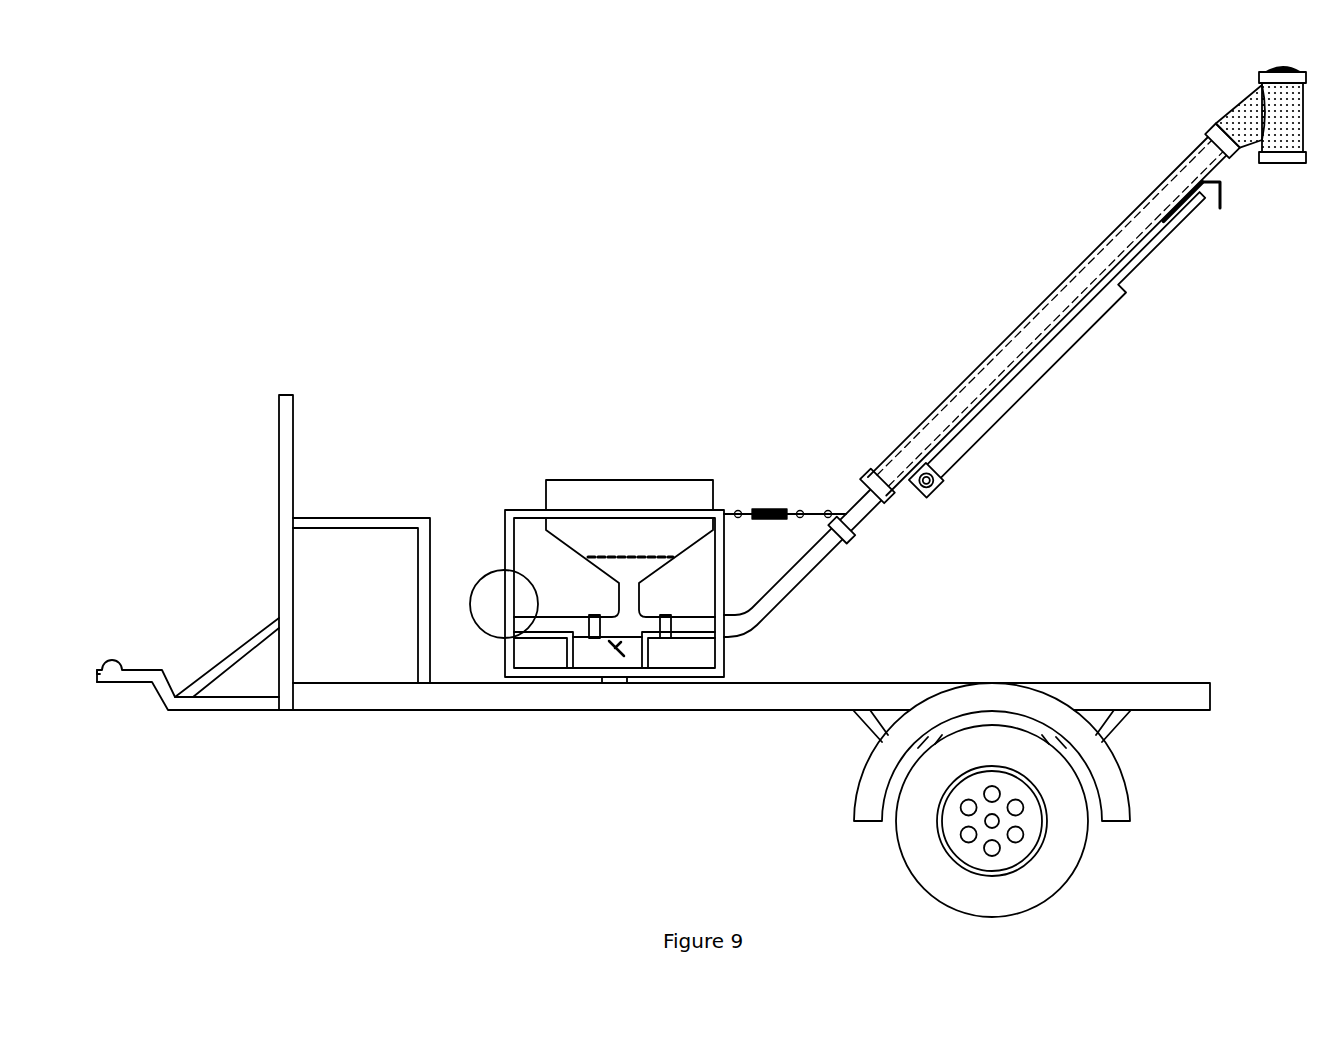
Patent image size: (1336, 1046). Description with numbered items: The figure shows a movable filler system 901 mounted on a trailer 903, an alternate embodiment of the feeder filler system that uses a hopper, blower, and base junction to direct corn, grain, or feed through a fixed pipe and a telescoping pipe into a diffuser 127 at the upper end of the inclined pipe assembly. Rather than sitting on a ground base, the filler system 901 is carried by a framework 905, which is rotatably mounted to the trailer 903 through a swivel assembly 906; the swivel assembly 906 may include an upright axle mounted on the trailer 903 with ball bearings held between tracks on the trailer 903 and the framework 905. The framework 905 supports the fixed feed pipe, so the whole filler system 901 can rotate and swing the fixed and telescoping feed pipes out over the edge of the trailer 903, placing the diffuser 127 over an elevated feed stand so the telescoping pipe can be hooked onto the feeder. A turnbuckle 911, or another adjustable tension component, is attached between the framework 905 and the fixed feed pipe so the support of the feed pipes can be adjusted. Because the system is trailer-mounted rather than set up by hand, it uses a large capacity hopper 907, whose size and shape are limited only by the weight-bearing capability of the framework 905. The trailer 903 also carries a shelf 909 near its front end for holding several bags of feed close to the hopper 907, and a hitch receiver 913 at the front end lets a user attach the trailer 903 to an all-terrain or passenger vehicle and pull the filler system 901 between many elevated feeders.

The diffuser 127 is at (1192, 102).
The movable filler system 901 is at (438, 361).
The trailer 903 is at (368, 700).
The framework 905 is at (512, 525).
The swivel assembly 906 is at (613, 682).
The large capacity hopper 907 is at (628, 497).
The shelf 909 is at (327, 523).
The turnbuckle 911 is at (761, 512).
The hitch receiver 913 is at (110, 665).